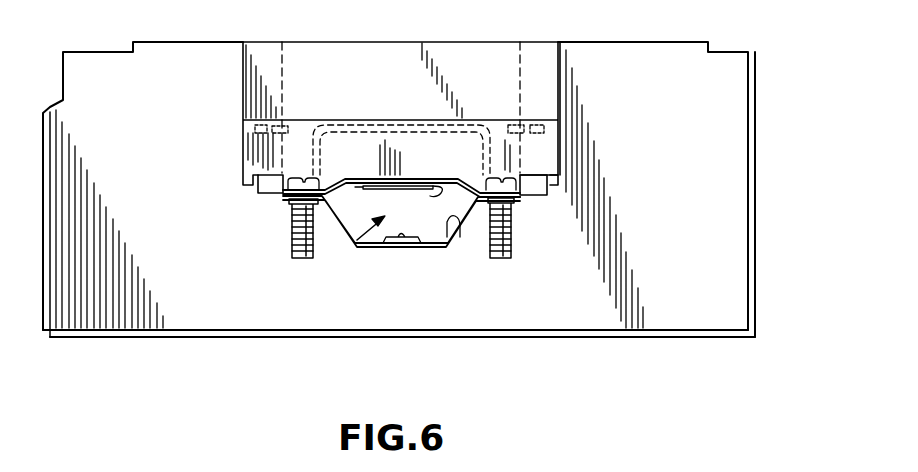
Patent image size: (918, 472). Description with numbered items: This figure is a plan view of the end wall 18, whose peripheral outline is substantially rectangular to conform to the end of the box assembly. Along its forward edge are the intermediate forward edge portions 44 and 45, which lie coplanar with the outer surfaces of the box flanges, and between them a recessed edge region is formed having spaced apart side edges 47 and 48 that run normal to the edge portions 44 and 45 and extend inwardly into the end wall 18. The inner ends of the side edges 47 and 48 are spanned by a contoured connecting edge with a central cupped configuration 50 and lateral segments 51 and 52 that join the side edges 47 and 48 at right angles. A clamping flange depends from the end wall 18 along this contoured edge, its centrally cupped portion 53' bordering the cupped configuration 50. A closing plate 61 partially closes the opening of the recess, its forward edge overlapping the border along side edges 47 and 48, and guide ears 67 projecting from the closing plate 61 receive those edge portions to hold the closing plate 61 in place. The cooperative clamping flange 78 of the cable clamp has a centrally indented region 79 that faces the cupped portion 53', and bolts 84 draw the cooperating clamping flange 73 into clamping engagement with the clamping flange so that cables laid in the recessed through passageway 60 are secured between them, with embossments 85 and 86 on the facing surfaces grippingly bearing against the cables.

The end wall 18 is at (718, 207).
The intermediate forward edge portion 44 is at (185, 42).
The intermediate forward edge portion 45 is at (657, 43).
The side edge 47 is at (283, 70).
The side edge 48 is at (520, 78).
The closing plate 61 is at (502, 50).
The guide ears 67 is at (442, 62).
The embossment 86 is at (476, 178).
The lateral segment 51 is at (280, 200).
The lateral segment 52 is at (517, 200).
The cooperative clamping flange 78 is at (347, 175).
The cooperating clamping flange 73 is at (373, 175).
The centrally indented region 79 is at (415, 177).
The cupped configuration 50 is at (447, 248).
The bolts 84 is at (290, 253).
The recessed through passageway 60 is at (355, 245).
The embossment 85 is at (393, 243).
The centrally cupped portion 53' is at (466, 298).